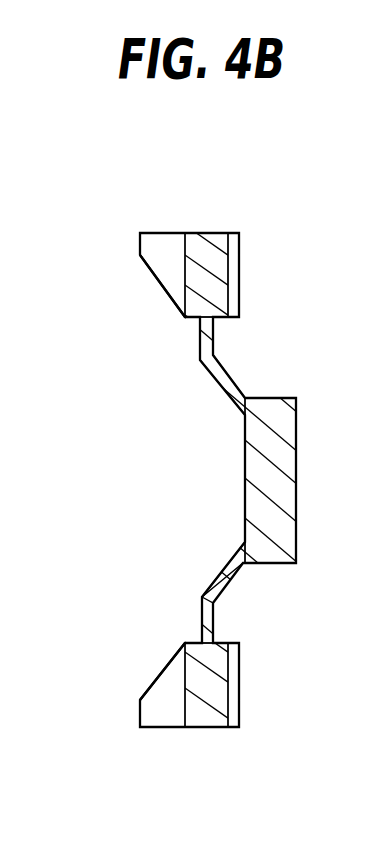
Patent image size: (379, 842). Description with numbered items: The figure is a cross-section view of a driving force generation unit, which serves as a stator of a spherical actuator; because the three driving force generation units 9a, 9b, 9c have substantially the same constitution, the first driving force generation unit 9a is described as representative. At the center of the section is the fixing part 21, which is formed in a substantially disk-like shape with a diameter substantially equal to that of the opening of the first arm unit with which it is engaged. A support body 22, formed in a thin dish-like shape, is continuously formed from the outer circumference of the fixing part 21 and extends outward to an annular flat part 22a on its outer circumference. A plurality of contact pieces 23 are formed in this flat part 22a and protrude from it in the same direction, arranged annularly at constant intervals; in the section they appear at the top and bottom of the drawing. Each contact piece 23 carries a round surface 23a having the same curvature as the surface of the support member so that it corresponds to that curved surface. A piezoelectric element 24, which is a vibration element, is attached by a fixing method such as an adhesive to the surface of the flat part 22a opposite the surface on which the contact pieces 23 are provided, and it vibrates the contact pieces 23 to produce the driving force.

The first driving force generation unit 9a is at (220, 472).
The driving force generation unit 9b is at (220, 472).
The driving force generation unit 9c is at (352, 155).
The fixing part 21 is at (288, 500).
The support body 22 is at (227, 375).
The annular flat part 22a is at (197, 313).
The contact pieces 23 is at (171, 238).
The round surface 23a is at (165, 293).
The piezoelectric element 24 is at (235, 280).